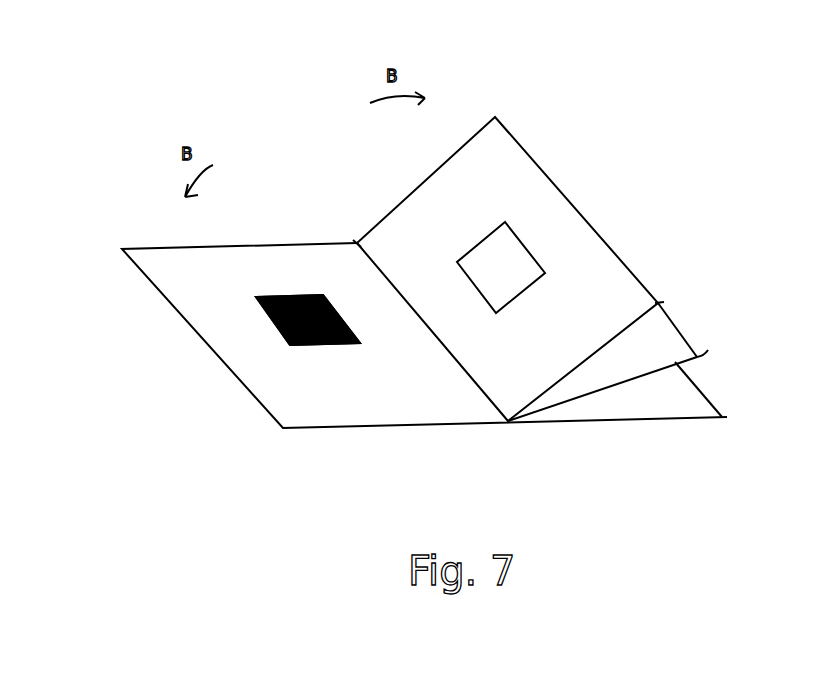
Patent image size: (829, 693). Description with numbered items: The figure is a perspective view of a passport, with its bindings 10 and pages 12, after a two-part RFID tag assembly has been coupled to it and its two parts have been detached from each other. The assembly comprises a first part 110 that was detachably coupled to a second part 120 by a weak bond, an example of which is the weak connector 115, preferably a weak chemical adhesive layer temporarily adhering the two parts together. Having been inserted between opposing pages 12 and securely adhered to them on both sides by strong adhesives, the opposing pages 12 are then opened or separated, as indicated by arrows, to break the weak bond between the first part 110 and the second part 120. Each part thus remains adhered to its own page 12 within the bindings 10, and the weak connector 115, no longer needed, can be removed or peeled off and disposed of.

The bindings 10 is at (155, 248).
The pages 12 is at (483, 127).
The first part 110 is at (508, 247).
The weak connector 115 is at (283, 303).
The second part 120 is at (267, 303).